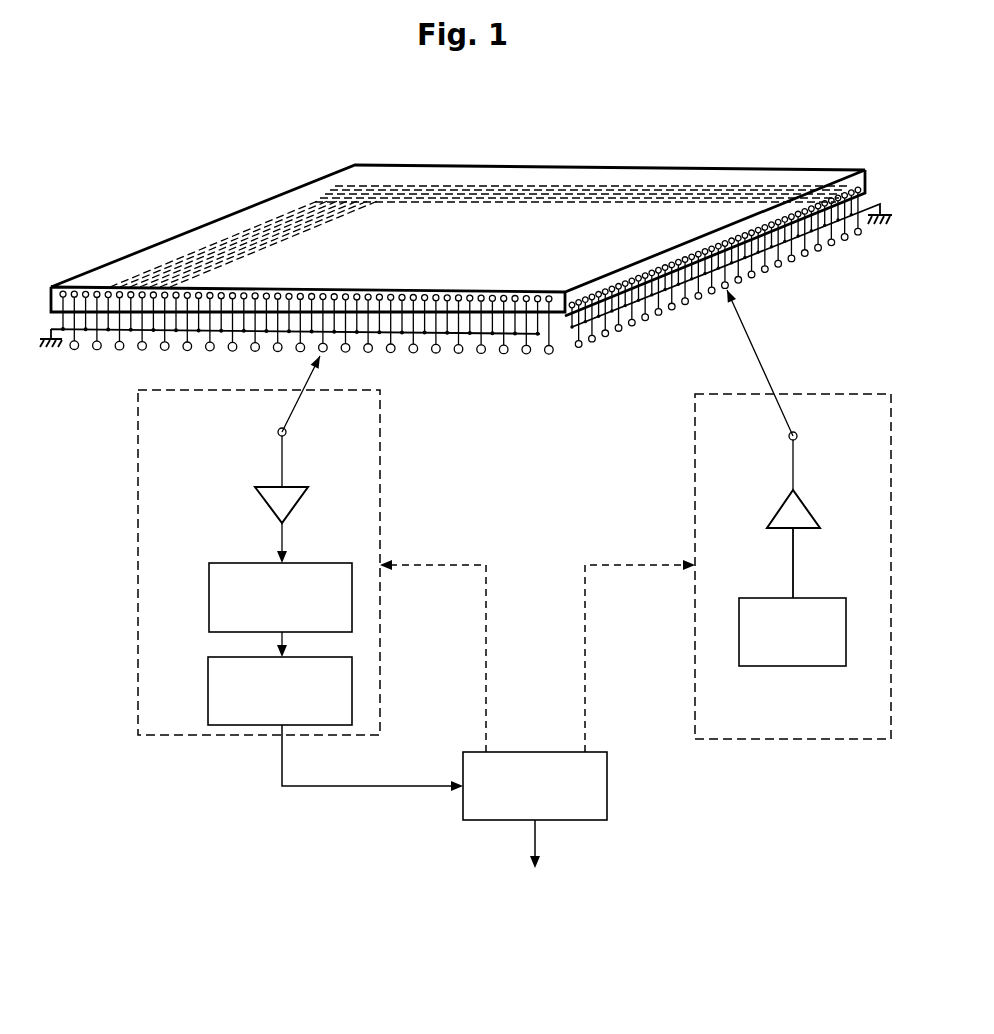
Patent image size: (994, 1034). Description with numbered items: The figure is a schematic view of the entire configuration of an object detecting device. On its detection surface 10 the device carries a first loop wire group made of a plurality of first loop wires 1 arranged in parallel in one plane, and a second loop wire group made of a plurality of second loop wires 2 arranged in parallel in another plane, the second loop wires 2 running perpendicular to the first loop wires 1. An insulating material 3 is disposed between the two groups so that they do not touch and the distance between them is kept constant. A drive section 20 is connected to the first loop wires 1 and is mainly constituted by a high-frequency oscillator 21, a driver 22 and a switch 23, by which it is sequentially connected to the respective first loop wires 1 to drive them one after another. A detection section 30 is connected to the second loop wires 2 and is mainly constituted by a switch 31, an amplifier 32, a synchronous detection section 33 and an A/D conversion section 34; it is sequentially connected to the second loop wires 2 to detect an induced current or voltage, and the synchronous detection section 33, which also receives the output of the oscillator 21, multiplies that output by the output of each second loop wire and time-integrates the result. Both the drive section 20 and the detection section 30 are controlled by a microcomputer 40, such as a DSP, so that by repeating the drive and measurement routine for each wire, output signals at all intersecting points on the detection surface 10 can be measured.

The first loop wires 1 is at (623, 282).
The second loop wires 2 is at (504, 296).
The insulating material 3 is at (585, 293).
The detection surface 10 is at (417, 277).
The drive section 20 is at (790, 740).
The high-frequency oscillator 21 is at (826, 666).
The driver 22 is at (806, 528).
The switch 23 is at (798, 434).
The detection section 30 is at (183, 737).
The switch 31 is at (276, 433).
The amplifier 32 is at (295, 505).
The synchronous detection section 33 is at (208, 600).
The A/D conversion section 34 is at (207, 698).
The microcomputer 40 is at (608, 787).